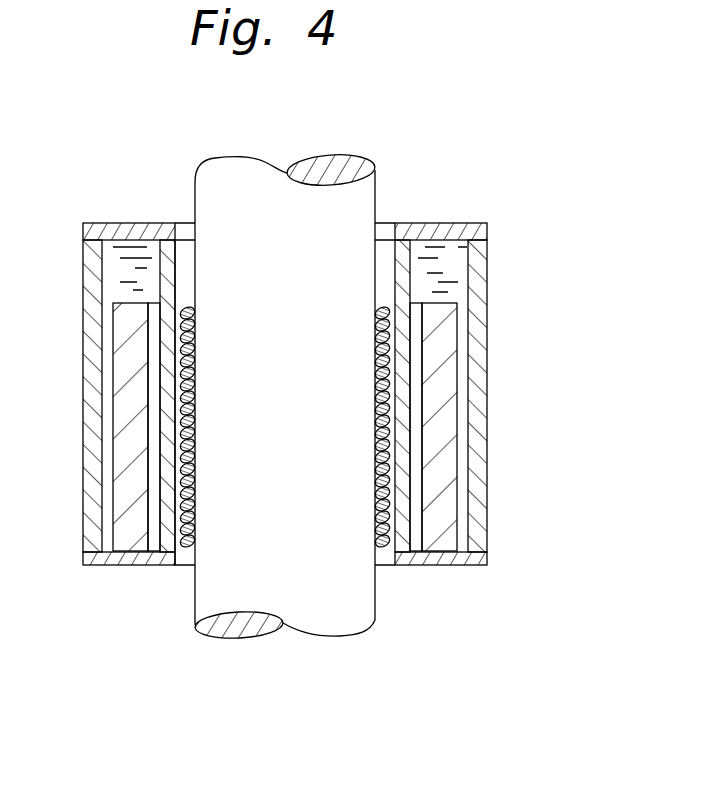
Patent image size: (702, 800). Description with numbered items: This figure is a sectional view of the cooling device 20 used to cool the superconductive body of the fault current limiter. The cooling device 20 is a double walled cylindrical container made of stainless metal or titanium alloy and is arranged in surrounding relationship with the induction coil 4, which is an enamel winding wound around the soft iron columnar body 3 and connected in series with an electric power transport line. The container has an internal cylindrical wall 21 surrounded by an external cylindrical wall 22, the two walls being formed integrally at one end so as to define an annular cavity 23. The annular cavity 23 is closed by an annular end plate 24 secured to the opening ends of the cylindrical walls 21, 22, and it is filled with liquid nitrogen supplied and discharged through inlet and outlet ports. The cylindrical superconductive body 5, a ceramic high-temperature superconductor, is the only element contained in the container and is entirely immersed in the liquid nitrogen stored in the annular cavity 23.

The columnar body 3 is at (367, 587).
The induction coil 4 is at (385, 443).
The cylindrical superconductive body 5 is at (452, 352).
The cooling device 20 is at (487, 283).
The internal cylindrical wall 21 is at (165, 372).
The external cylindrical wall 22 is at (92, 440).
The annular cavity 23 is at (450, 252).
The annular end plate 24 is at (128, 232).